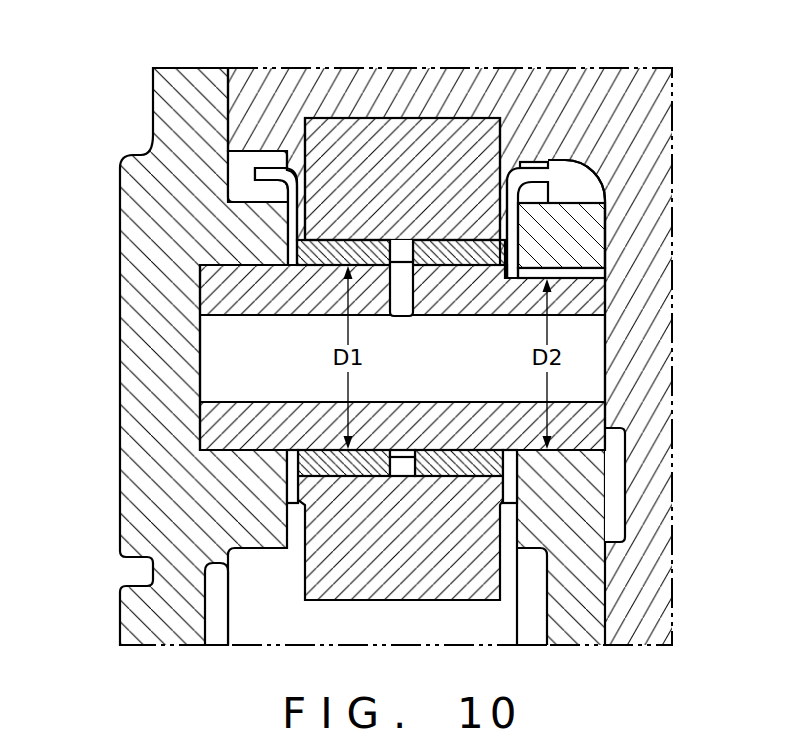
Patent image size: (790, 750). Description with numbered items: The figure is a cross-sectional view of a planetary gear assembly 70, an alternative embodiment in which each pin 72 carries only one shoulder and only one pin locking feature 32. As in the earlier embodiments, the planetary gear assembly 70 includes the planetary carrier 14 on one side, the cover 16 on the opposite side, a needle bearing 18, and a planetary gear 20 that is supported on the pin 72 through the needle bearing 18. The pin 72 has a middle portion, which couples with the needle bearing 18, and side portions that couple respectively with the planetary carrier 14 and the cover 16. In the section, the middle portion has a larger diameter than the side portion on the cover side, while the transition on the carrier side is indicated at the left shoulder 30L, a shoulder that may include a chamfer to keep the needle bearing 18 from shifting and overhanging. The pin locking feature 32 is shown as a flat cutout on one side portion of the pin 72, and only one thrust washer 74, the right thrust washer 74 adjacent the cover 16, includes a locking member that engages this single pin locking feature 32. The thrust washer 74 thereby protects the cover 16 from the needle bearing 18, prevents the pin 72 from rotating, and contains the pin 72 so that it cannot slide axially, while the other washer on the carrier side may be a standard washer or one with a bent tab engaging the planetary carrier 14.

The planetary carrier 14 is at (150, 122).
The cover 16 is at (612, 226).
The needle bearing 18 is at (347, 490).
The planetary gear 20 is at (355, 118).
The left shoulder 30L is at (500, 280).
The pin locking feature 32 is at (583, 278).
The planetary gear assembly 70 is at (476, 92).
The pin 72 is at (230, 452).
The thrust washer 74 is at (517, 235).